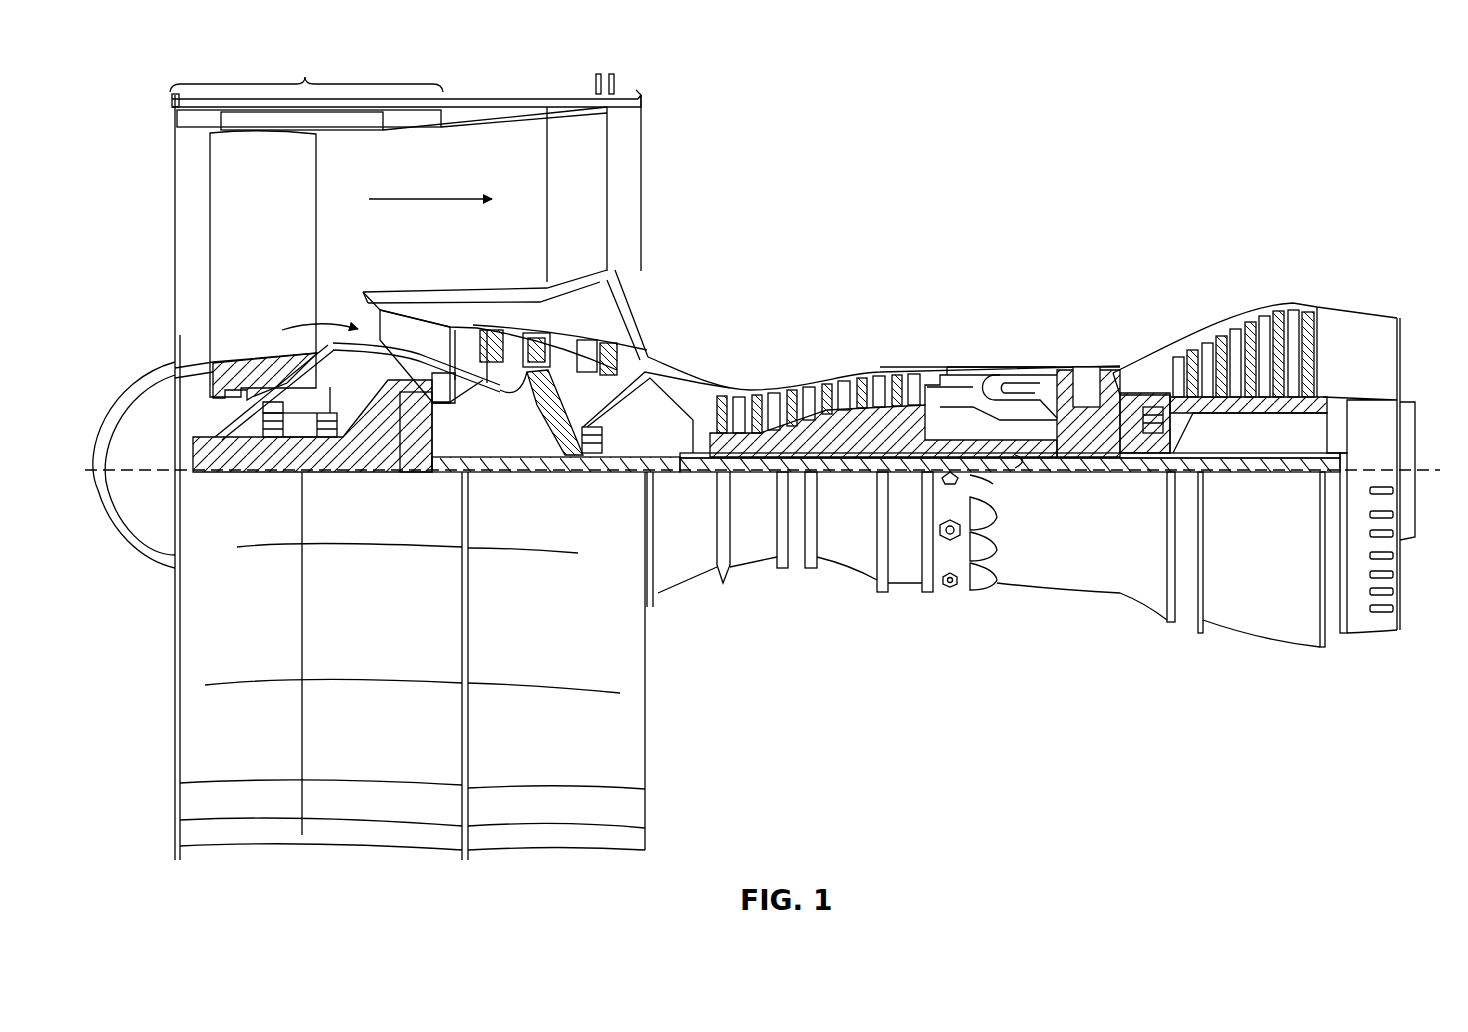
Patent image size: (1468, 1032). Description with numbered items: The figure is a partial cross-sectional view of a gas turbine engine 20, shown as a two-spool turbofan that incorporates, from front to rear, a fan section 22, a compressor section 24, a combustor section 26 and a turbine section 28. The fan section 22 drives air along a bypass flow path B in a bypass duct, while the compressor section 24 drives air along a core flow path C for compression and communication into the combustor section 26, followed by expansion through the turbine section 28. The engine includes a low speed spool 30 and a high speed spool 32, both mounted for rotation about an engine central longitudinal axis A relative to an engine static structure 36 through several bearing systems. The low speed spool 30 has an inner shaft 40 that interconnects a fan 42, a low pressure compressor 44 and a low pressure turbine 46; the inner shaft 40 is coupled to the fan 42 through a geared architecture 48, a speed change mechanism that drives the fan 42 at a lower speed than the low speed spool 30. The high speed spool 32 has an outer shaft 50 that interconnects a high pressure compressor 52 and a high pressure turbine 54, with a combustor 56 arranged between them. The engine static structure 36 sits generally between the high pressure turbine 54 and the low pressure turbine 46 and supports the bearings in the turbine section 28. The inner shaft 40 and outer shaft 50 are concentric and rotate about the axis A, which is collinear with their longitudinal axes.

The gas turbine engine 20 is at (1222, 138).
The fan section 22 is at (392, 451).
The compressor section 24 is at (708, 328).
The combustor section 26 is at (1010, 300).
The turbine section 28 is at (1193, 322).
The low speed spool 30 is at (866, 480).
The high speed spool 32 is at (940, 392).
The engine static structure 36 is at (906, 594).
The inner shaft 40 is at (661, 476).
The fan 42 is at (288, 224).
The low pressure compressor 44 is at (563, 347).
The low pressure turbine 46 is at (1253, 328).
The geared architecture 48 is at (416, 442).
The outer shaft 50 is at (1025, 452).
The high pressure compressor 52 is at (827, 440).
The high pressure turbine 54 is at (1087, 372).
The combustor 56 is at (1010, 385).
The engine central longitudinal axis A is at (1434, 466).
The bypass flow path B is at (437, 195).
The core flow path C is at (300, 325).